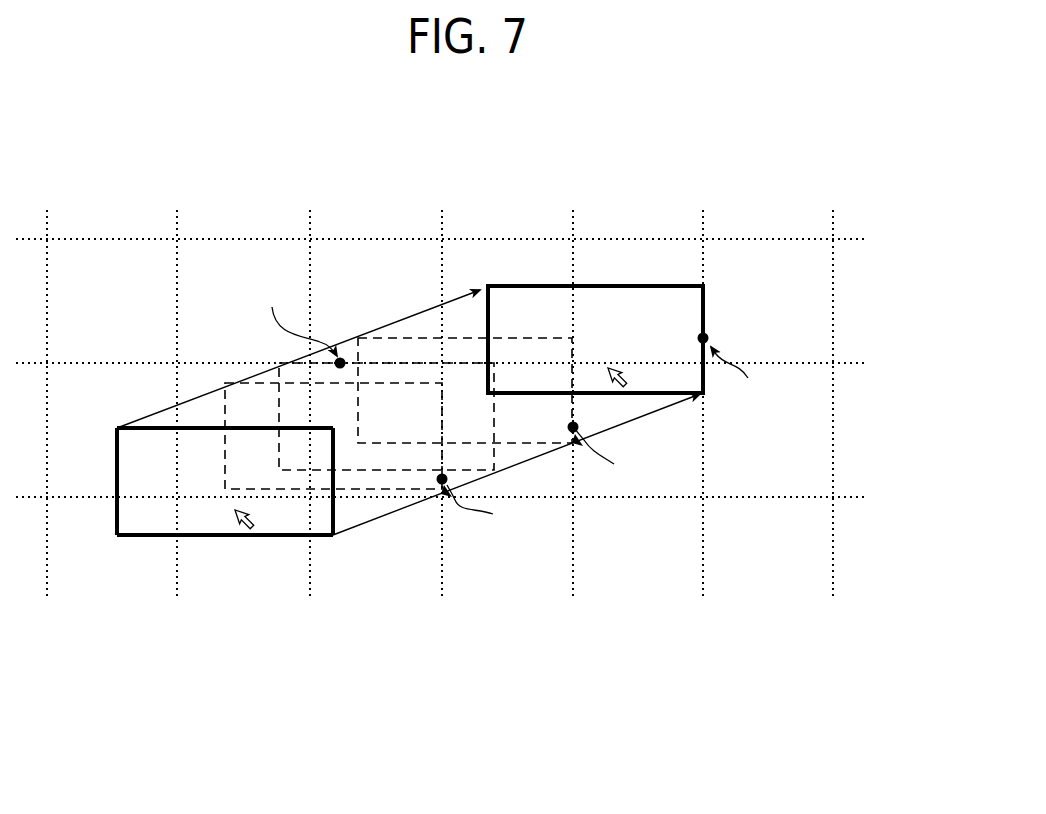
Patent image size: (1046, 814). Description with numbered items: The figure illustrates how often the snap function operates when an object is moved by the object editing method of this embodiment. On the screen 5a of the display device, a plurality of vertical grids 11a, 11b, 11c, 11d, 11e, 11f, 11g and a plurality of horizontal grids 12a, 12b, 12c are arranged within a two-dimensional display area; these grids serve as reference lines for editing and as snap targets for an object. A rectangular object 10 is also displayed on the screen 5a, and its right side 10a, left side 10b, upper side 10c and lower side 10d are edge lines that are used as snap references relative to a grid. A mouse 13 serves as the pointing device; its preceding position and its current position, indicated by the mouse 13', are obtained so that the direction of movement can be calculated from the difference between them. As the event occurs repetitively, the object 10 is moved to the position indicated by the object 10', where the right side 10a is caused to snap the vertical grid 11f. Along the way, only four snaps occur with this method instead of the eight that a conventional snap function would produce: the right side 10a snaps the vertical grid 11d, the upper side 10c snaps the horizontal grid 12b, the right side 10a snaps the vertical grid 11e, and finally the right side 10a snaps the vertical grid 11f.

The screen 5a is at (469, 499).
The object 10 is at (237, 509).
The object 10' is at (611, 284).
The right side 10a is at (335, 515).
The left side 10b is at (117, 464).
The upper side 10c is at (208, 428).
The lower side 10d is at (295, 537).
The vertical grid 11a is at (52, 575).
The vertical grid 11b is at (182, 588).
The vertical grid 11c is at (313, 570).
The vertical grid 11d is at (446, 578).
The vertical grid 11e is at (576, 578).
The vertical grid 11f is at (706, 578).
The vertical grid 11g is at (836, 578).
The horizontal grid 12a is at (863, 240).
The horizontal grid 12b is at (863, 365).
The horizontal grid 12c is at (863, 498).
The mouse 13 is at (233, 555).
The mouse 13' is at (704, 420).